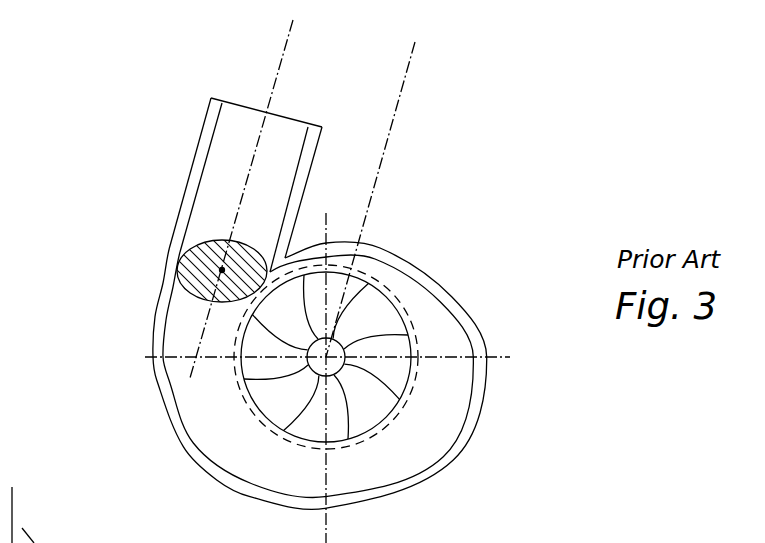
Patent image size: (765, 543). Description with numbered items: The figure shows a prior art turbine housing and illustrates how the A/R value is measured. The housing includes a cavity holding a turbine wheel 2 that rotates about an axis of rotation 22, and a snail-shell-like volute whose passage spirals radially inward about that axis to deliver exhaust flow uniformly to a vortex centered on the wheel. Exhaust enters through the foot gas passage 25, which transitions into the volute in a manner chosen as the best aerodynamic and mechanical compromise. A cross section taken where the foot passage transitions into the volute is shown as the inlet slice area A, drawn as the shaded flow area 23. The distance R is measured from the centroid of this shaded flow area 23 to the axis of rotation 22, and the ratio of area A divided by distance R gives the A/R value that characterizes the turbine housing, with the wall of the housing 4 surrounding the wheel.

The turbine wheel 2 is at (358, 418).
The volute casing 4 is at (401, 255).
The axis of rotation 22 is at (330, 353).
The shaded flow area 23 is at (215, 237).
The foot gas passage 25 is at (237, 143).
The area at volute inlet slice A is at (222, 269).
The distance from centroid of shaded flow area to turbine wheel axis R is at (290, 43).